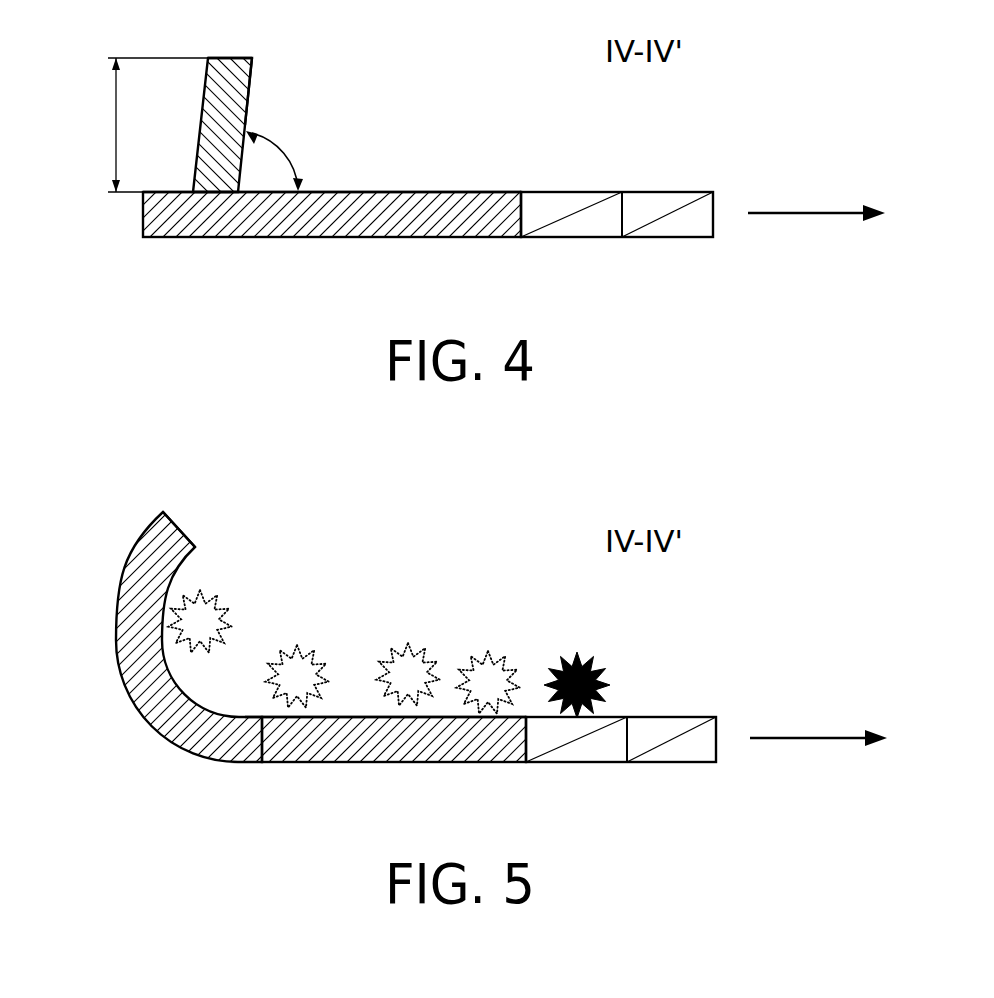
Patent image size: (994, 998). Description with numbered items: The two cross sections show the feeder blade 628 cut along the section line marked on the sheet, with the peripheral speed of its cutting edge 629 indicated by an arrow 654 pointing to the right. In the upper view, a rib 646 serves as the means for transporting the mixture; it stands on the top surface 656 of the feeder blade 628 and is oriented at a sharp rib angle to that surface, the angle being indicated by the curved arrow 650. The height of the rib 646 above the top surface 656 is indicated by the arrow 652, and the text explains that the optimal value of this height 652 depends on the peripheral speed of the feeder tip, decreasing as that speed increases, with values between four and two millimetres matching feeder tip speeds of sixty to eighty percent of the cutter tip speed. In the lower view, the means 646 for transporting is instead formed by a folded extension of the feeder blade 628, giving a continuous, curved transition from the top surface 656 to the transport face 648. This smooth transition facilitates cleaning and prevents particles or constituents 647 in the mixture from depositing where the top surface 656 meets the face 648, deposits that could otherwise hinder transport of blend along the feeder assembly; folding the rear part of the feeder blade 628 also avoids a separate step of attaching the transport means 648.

In FIG. 4, the feeder blade 628 is at (453, 226).
In FIG. 5, the feeder blade 628 is at (458, 749).
In FIG. 4, the cutting edge 629 is at (677, 224).
In FIG. 5, the cutting edge 629 is at (621, 739).
In FIG. 4, the rib 646 is at (232, 64).
In FIG. 5, the rib 646 is at (137, 659).
In FIG. 5, the particles or constituents 647 is at (585, 657).
In FIG. 4, the transport face 648 is at (251, 84).
In FIG. 5, the transport face 648 is at (178, 560).
In FIG. 4, the rib angle 650 is at (285, 149).
In FIG. 4, the rib height 652 is at (116, 125).
In FIG. 4, the peripheral speed arrow 654 is at (820, 215).
In FIG. 5, the peripheral speed arrow 654 is at (825, 740).
In FIG. 4, the top surface 656 is at (473, 191).
In FIG. 5, the top surface 656 is at (357, 716).